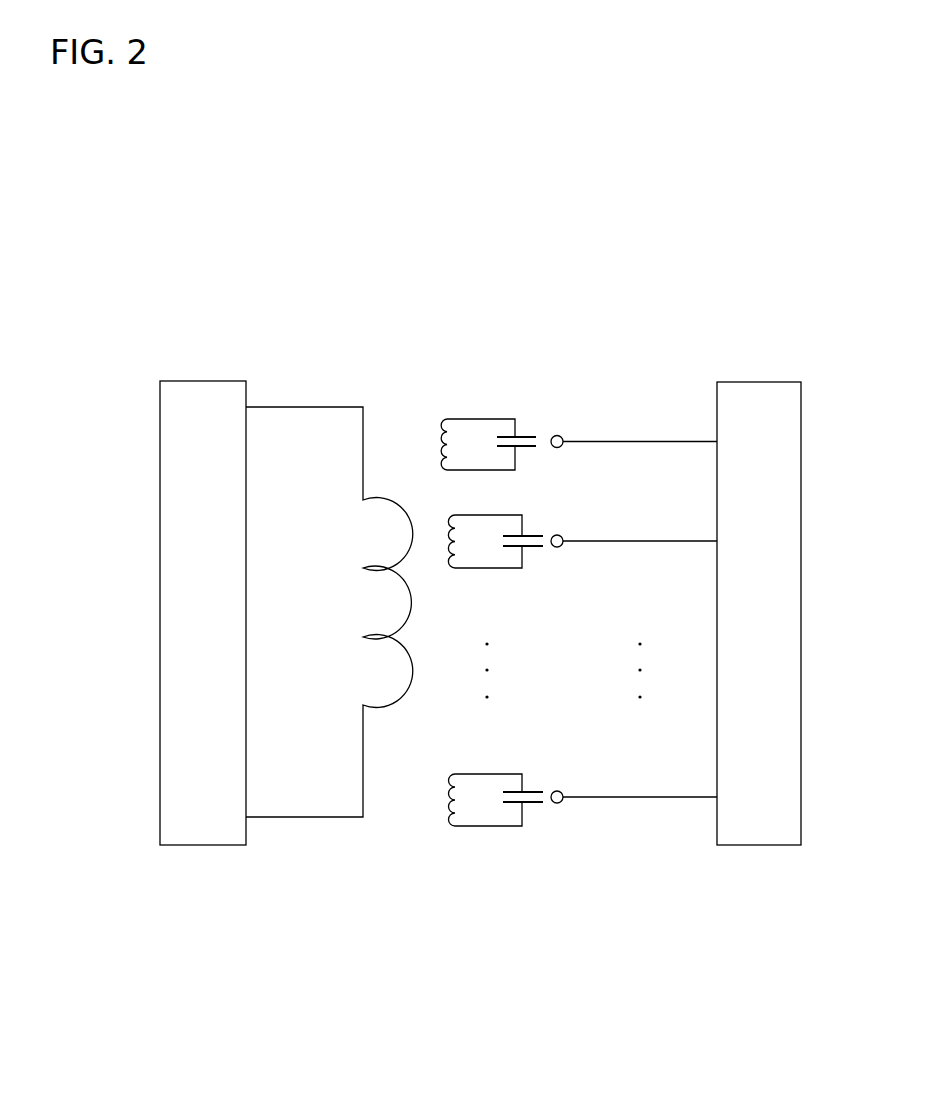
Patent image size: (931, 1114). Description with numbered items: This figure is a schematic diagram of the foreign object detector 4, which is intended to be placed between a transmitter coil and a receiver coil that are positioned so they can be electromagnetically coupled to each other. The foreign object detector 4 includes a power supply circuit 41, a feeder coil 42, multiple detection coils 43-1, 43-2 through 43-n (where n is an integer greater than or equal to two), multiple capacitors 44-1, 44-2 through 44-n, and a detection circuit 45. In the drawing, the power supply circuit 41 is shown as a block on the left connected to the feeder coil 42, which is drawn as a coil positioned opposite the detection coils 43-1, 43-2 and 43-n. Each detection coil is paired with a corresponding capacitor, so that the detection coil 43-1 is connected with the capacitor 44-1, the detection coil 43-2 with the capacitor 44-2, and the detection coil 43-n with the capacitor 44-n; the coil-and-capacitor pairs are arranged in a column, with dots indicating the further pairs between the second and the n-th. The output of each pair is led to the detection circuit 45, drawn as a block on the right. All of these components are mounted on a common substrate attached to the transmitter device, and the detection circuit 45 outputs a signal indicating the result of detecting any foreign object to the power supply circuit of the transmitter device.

The foreign object detector 4 is at (749, 1010).
The power supply circuit 41 is at (190, 845).
The feeder coil 42 is at (400, 708).
The detection coil 43-1 is at (443, 418).
The detection coil 43-2 is at (447, 520).
The detection coil 43-n is at (450, 826).
The capacitor 44-1 is at (530, 434).
The capacitor 44-2 is at (535, 532).
The capacitor 44-n is at (537, 808).
The detection circuit 45 is at (772, 845).